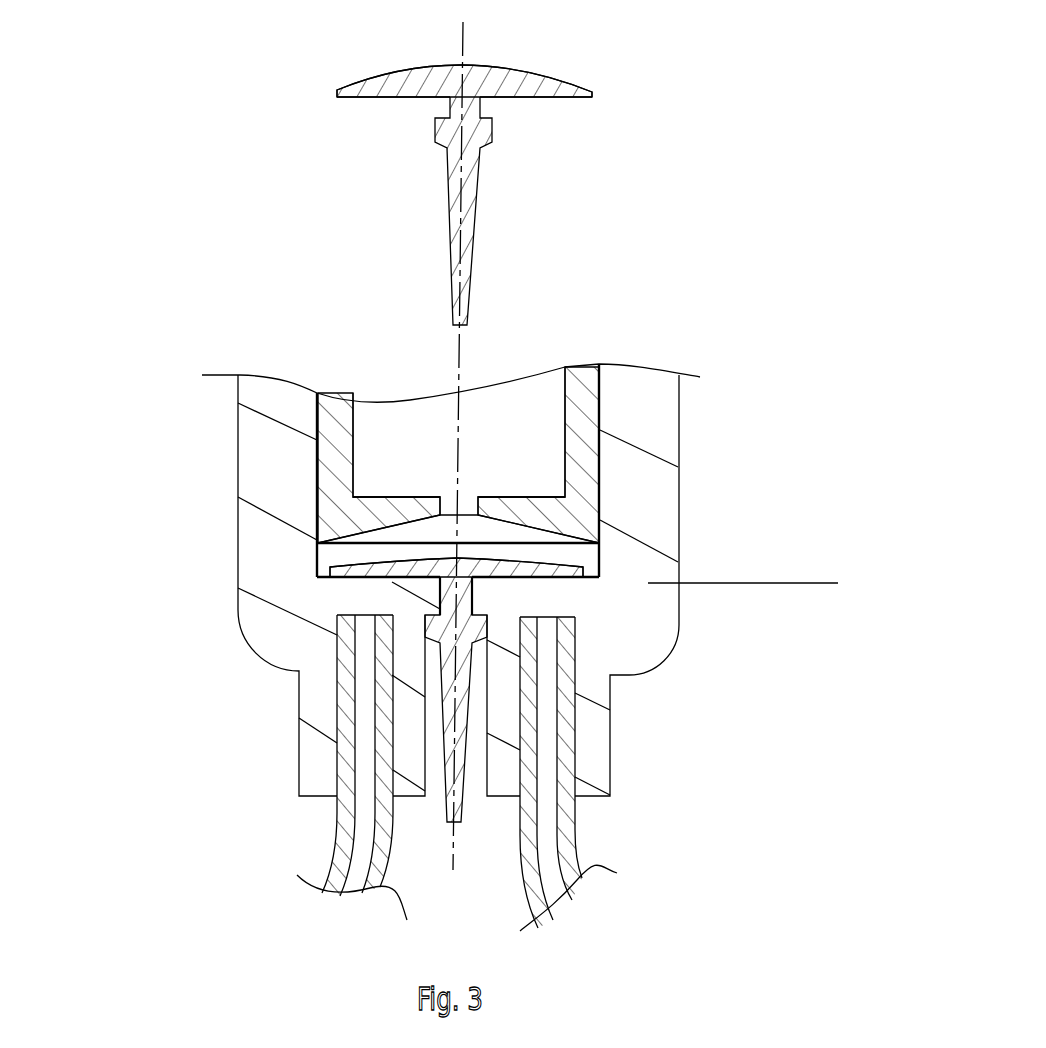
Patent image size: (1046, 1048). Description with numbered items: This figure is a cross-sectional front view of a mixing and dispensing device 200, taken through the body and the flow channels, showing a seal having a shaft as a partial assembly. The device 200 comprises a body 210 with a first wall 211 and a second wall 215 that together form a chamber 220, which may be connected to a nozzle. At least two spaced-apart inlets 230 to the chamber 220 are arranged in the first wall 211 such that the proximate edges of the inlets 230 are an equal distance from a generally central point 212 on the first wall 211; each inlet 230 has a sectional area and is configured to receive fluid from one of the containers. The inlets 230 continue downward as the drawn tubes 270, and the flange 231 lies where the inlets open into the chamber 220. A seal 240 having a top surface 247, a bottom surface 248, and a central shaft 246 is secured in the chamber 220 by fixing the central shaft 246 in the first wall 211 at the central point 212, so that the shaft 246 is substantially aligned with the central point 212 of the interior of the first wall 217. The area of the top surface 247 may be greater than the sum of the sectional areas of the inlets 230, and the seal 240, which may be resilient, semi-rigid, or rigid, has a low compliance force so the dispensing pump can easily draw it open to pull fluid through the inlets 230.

The mixing and dispensing device 200 is at (142, 238).
The body 210 is at (167, 512).
The first wall 211 is at (328, 582).
The central point 212 is at (601, 428).
The second wall 215 is at (273, 558).
The interior of the first wall 217 is at (793, 582).
The chamber 220 is at (402, 535).
The inlets 230 is at (355, 615).
The flange / seal 231 is at (378, 577).
The seal 240 is at (640, 66).
The central shaft 246 is at (477, 208).
The top surface 247 is at (555, 80).
The bottom surface 248 is at (552, 93).
The tubes 270 is at (360, 863).